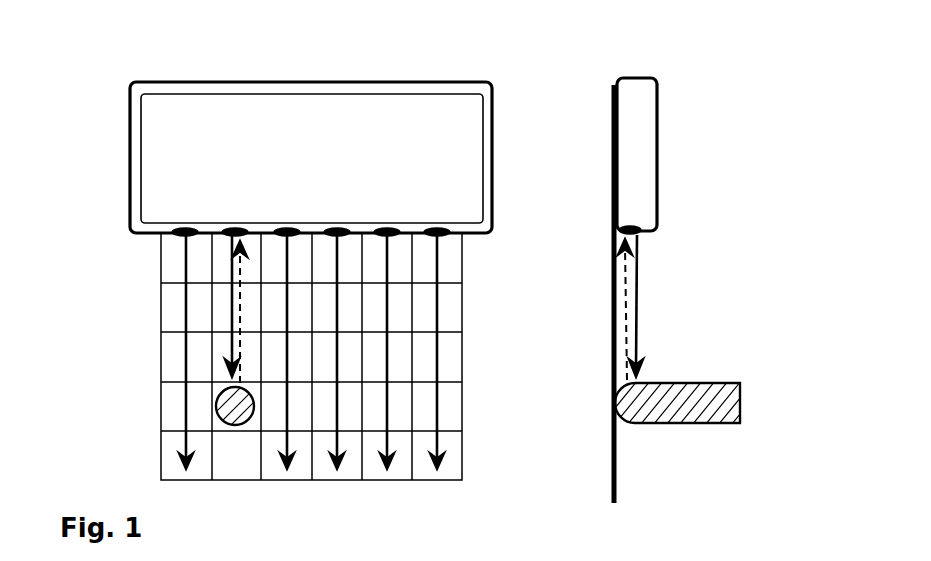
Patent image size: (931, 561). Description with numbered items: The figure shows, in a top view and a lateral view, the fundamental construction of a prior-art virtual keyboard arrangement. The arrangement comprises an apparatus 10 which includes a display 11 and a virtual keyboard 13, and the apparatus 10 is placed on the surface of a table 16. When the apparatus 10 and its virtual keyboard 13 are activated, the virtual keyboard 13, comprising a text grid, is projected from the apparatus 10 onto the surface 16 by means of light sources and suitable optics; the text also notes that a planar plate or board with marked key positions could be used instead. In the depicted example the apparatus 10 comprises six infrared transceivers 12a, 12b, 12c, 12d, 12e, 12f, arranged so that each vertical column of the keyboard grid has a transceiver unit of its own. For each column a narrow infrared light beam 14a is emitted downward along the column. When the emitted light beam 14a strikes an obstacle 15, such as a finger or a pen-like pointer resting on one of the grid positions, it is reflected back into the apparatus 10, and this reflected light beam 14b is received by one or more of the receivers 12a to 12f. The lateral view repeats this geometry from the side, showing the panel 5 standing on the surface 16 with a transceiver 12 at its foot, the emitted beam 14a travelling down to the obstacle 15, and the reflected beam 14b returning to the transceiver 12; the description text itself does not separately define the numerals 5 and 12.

The light emitting panel 5 is at (630, 87).
The apparatus 10 is at (157, 82).
The display 11 is at (435, 104).
The light emitter 12 is at (640, 233).
The infrared transceiver 12a is at (185, 228).
The infrared transceiver 12b is at (235, 228).
The infrared transceiver 12c is at (287, 228).
The infrared transceiver 12d is at (337, 228).
The infrared transceiver 12e is at (387, 228).
The infrared transceiver 12f is at (437, 228).
The virtual keyboard 13 is at (160, 290).
The infrared light beam 14a is at (240, 318).
The reflected light beam 14b is at (240, 318).
The obstacle 15 is at (218, 405).
The surface of a table 16 is at (608, 350).